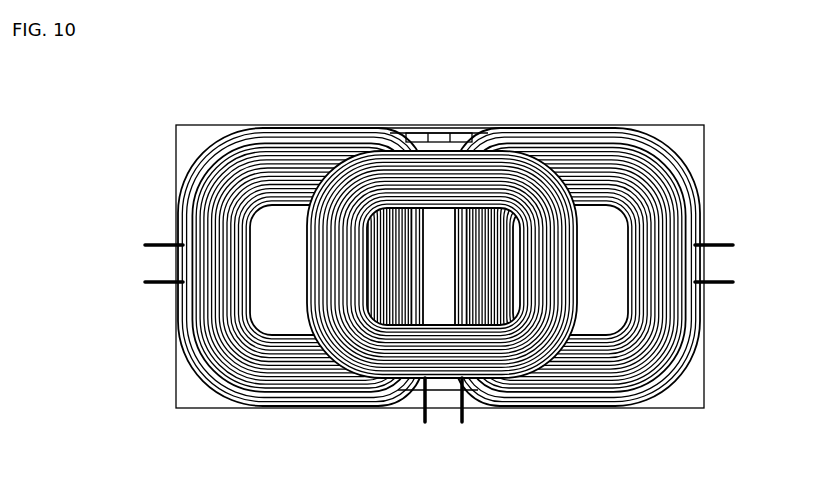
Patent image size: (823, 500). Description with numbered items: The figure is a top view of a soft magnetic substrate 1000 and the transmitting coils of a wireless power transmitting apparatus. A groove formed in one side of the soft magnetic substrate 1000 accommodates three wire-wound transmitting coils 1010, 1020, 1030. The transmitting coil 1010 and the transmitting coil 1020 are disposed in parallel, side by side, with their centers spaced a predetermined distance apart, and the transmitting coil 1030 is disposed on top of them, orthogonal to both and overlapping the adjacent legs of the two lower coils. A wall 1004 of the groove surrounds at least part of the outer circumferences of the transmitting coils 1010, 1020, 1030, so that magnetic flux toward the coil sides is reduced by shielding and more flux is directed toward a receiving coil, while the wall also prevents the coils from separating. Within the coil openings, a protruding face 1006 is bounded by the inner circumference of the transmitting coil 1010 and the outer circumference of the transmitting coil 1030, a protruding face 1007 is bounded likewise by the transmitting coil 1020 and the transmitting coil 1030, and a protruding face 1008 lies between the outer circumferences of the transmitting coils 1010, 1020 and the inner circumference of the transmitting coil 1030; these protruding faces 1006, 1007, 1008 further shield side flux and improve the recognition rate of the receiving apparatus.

The soft magnetic substrate 1000 is at (685, 140).
The wall 1004 is at (693, 362).
The protruding face 1006 is at (277, 290).
The protruding face 1007 is at (588, 308).
The protruding face 1008 is at (440, 306).
The transmitting coil 1010 is at (200, 284).
The transmitting coil 1020 is at (598, 165).
The transmitting coil 1030 is at (442, 182).